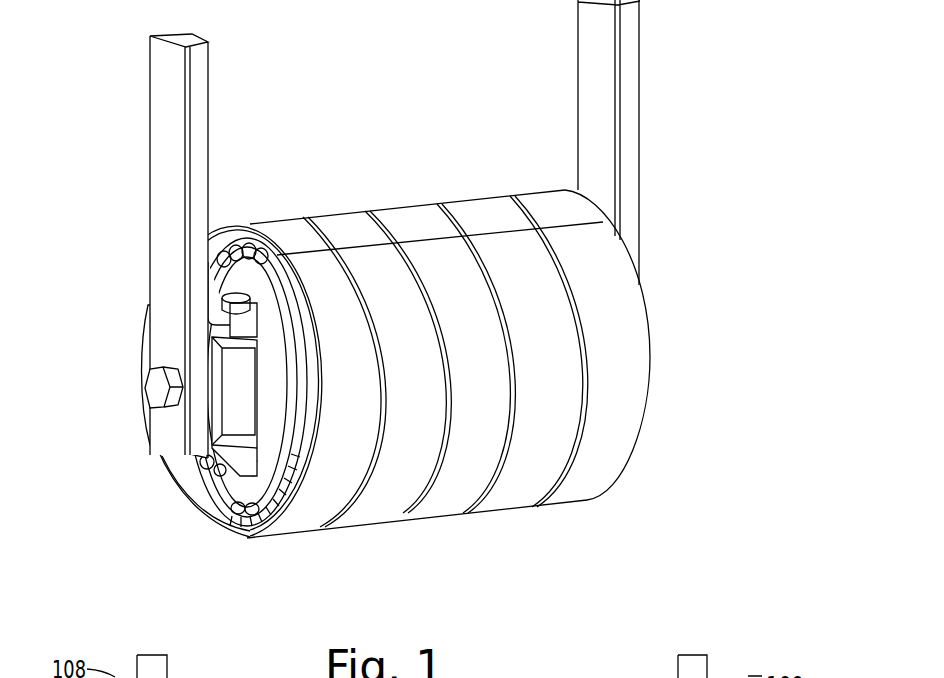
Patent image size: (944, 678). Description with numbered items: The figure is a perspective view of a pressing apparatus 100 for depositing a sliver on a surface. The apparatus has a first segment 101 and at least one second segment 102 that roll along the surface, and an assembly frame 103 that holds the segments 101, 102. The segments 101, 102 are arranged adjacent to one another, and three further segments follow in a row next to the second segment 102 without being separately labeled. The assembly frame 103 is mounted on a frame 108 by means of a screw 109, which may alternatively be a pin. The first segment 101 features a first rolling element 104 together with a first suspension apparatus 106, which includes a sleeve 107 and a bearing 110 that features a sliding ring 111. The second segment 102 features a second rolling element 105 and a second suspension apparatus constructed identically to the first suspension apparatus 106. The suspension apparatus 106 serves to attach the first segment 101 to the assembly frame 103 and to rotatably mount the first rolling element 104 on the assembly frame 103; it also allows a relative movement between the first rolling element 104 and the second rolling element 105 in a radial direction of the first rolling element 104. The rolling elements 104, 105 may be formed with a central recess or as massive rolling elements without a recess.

The pressing apparatus 100 is at (688, 197).
The first segment 101 is at (273, 215).
The second segment 102 is at (345, 208).
The assembly frame 103 is at (232, 396).
The first rolling element 104 is at (263, 518).
The second rolling element 105 is at (402, 503).
The first suspension apparatus 106 is at (240, 499).
The sleeve 107 is at (228, 306).
The frame 108 is at (162, 71).
The screw 109 is at (157, 392).
The bearing 110 is at (240, 268).
The sliding ring 111 is at (252, 245).